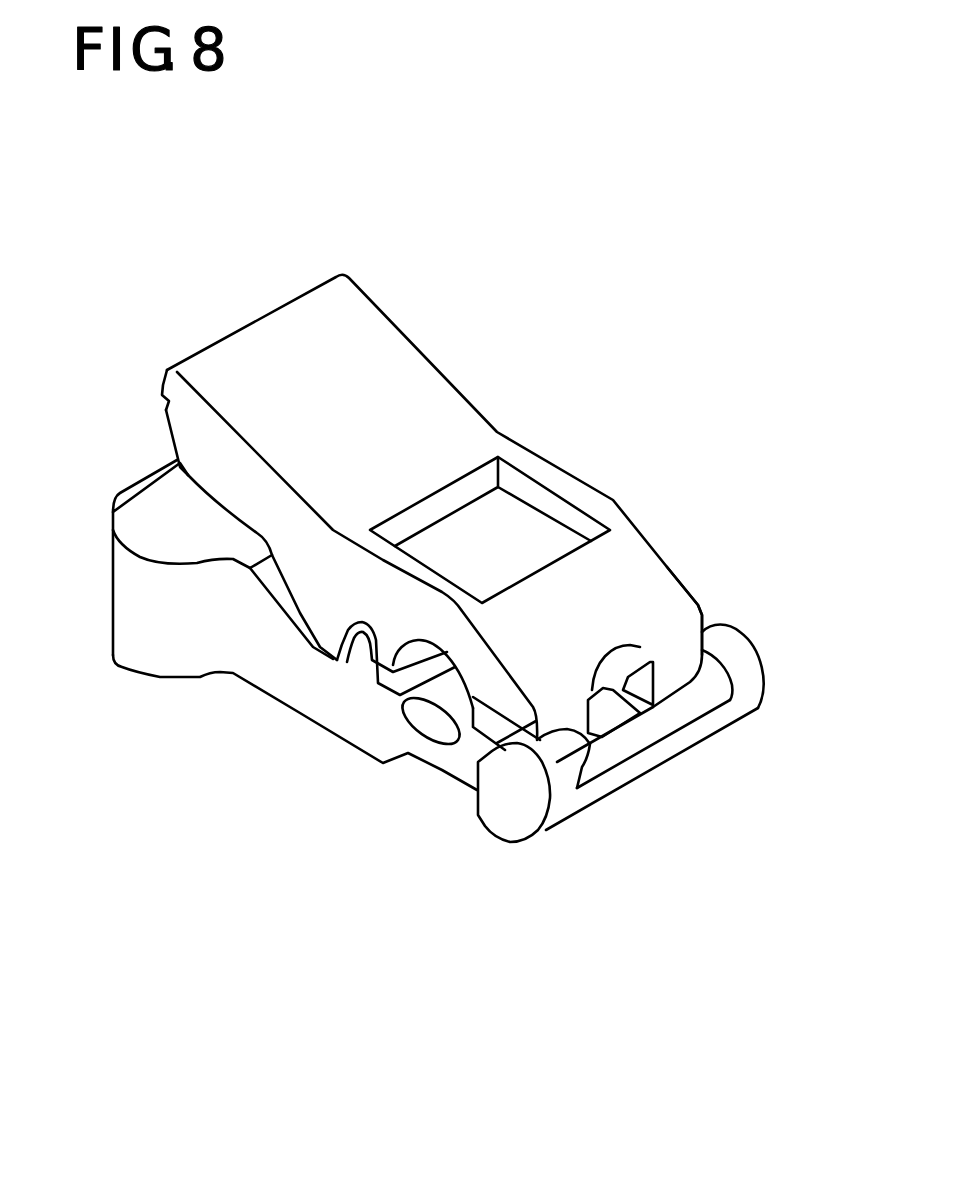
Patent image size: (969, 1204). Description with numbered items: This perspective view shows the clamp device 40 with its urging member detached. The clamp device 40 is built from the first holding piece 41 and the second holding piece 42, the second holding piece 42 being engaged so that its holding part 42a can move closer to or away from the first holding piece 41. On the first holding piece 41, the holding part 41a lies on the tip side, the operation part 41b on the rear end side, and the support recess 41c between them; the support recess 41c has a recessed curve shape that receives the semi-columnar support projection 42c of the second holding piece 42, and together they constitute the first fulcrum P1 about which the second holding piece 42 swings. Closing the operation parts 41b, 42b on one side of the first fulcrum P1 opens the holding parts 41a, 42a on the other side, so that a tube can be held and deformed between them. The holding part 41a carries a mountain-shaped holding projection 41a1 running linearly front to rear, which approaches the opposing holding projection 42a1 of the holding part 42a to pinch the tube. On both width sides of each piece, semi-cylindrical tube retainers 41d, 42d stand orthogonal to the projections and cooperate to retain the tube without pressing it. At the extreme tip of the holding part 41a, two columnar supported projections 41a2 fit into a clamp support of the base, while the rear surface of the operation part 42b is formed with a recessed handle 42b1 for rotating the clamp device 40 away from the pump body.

The clamp device 40 is at (698, 248).
The first holding piece 41 is at (156, 519).
The holding part 41a is at (511, 806).
The holding projection 41a1 is at (640, 647).
The supported projection 41a2 is at (723, 640).
The operation part 41b is at (131, 634).
The support recess 41c is at (331, 662).
The tube retainer 41d is at (417, 648).
The second holding piece 42 is at (243, 360).
The holding part 42a is at (602, 611).
The holding projection 42a1 is at (612, 702).
The operation part 42b is at (337, 378).
The handle 42b1 is at (163, 391).
The support projection 42c is at (350, 625).
The tube retainer 42d is at (357, 657).
The first fulcrum P1 is at (326, 662).